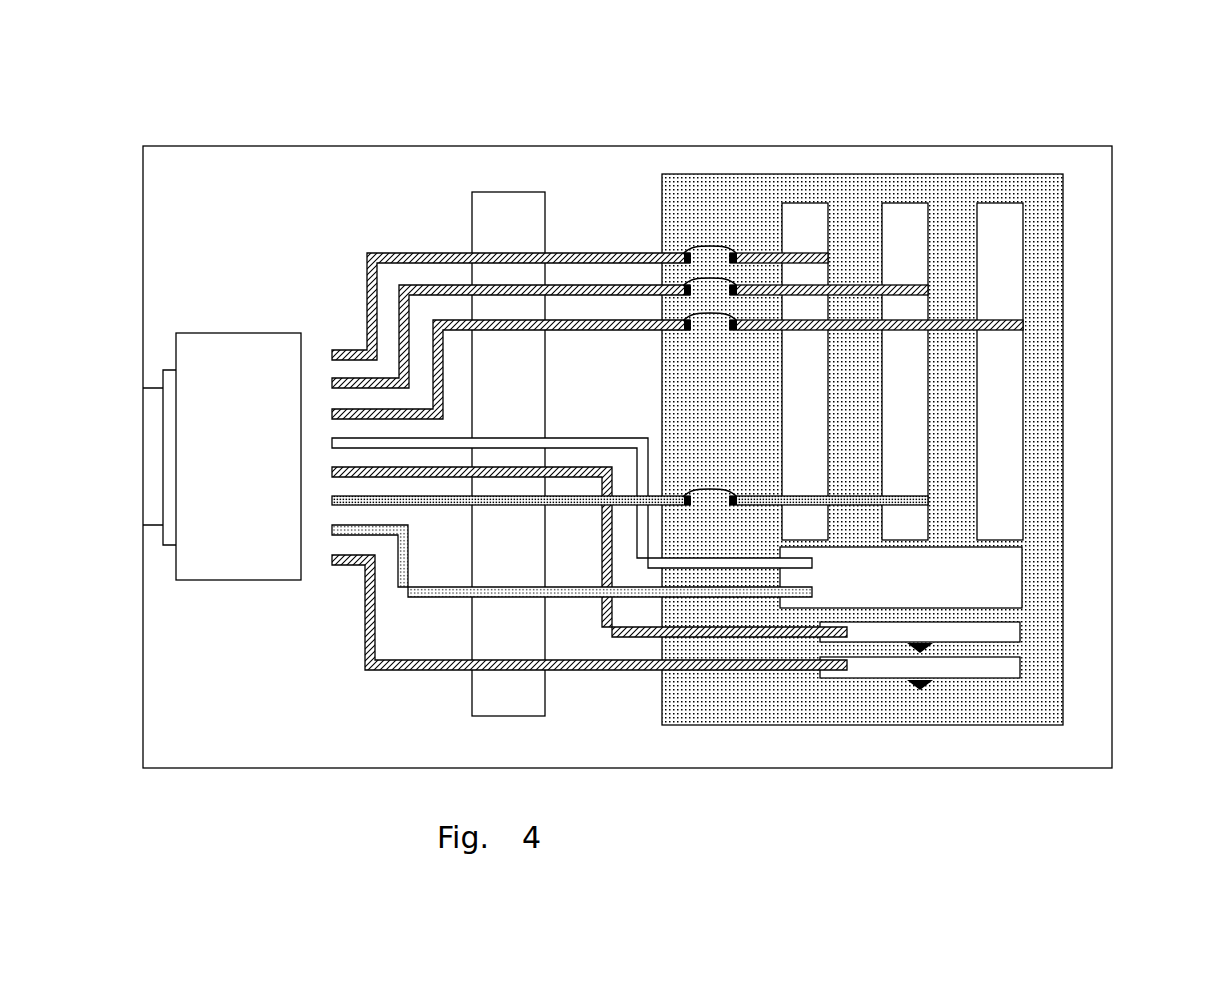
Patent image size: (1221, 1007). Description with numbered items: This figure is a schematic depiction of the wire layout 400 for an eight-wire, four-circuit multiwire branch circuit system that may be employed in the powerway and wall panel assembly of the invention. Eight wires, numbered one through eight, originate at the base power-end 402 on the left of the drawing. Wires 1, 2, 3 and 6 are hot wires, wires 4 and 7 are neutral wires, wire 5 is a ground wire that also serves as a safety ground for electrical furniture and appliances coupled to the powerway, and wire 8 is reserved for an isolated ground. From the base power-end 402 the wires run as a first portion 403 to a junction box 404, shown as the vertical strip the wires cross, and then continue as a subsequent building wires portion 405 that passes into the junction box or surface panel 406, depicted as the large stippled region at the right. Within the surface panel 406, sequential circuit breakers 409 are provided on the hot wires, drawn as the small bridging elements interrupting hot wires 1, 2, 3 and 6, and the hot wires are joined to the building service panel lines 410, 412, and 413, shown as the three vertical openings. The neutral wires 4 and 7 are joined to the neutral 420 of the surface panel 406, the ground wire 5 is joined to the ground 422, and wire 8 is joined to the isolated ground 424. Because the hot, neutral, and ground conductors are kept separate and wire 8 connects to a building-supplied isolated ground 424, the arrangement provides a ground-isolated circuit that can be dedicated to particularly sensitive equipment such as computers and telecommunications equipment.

The connector assembly 400 is at (350, 98).
The base power-end 402 is at (230, 560).
The first portion 403 is at (645, 299).
The junction box 404 is at (480, 693).
The building wires portion 405 is at (618, 416).
The surface panel 406 is at (745, 723).
The sequential circuit breakers 409 is at (712, 246).
The building service panel line 410 is at (803, 232).
The building service panel line 412 is at (900, 229).
The building service panel line 413 is at (996, 233).
The neutral 420 is at (1002, 578).
The ground 422 is at (1007, 631).
The isolated ground 424 is at (960, 668).
The hot wire 1 is at (568, 310).
The hot wire 2 is at (618, 340).
The hot wire 3 is at (665, 374).
The neutral wire 4 is at (560, 500).
The ground wire 5 is at (577, 549).
The hot wire 6 is at (618, 501).
The neutral wire 7 is at (560, 557).
The wire 8 is at (577, 609).